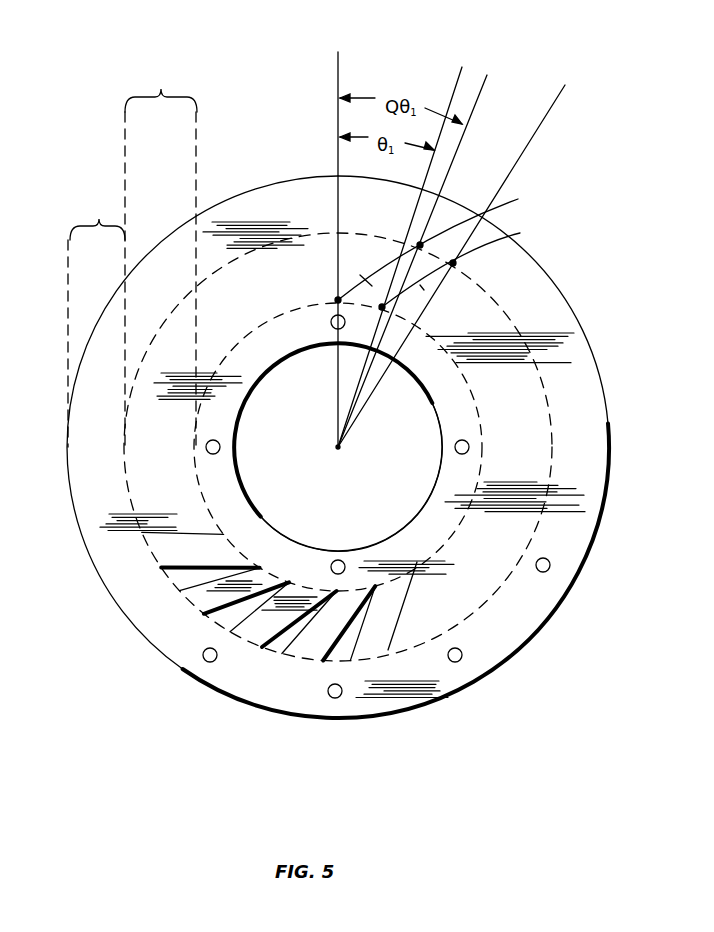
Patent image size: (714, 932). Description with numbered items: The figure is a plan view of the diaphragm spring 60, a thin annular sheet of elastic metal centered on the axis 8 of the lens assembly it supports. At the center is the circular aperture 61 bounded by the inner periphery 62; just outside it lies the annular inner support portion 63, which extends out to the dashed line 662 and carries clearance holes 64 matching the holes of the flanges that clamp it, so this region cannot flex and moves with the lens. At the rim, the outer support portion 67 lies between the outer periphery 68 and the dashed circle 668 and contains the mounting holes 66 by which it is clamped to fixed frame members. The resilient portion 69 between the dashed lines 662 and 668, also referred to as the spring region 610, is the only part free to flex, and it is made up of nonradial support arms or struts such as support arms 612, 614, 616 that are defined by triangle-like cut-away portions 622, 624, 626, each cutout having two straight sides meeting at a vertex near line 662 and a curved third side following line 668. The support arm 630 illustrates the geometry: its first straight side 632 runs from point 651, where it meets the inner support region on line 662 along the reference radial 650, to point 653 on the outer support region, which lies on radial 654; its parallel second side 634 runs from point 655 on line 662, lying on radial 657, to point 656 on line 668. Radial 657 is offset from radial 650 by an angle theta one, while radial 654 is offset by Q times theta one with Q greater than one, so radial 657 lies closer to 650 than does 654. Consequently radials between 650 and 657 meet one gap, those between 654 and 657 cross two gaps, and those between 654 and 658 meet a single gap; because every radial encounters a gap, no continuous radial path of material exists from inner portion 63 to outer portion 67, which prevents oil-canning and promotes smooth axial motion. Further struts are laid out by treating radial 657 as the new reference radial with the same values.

The axis 8 is at (338, 447).
The diaphragm spring 60 is at (570, 670).
The central aperture 61 is at (338, 514).
The inner periphery 62 is at (351, 477).
The inner support portion 63 is at (222, 410).
The clearance holes 64 is at (220, 449).
The mounting holes 66 is at (205, 660).
The outer support portion 67 is at (97, 279).
The outer periphery 68 is at (608, 445).
The resilient portion 69 is at (161, 257).
The spring region 610 is at (147, 463).
The support arm 612 is at (390, 655).
The support arm 614 is at (317, 645).
The support arm 616 is at (243, 633).
The cut-away portion 622 is at (350, 650).
The cut-away portion 624 is at (287, 650).
The cut-away portion 626 is at (205, 617).
The support arm 630 is at (418, 268).
The first side 632 is at (372, 286).
The second side 634 is at (420, 285).
The reference radial 650 is at (338, 62).
The point 651 is at (338, 300).
The point 653 is at (448, 242).
The radial 654 is at (488, 76).
The point 655 is at (382, 307).
The point 656 is at (453, 263).
The radial 657 is at (462, 67).
The radial 658 is at (565, 88).
The dashed line 662 is at (477, 412).
The dashed circle 668 is at (518, 322).